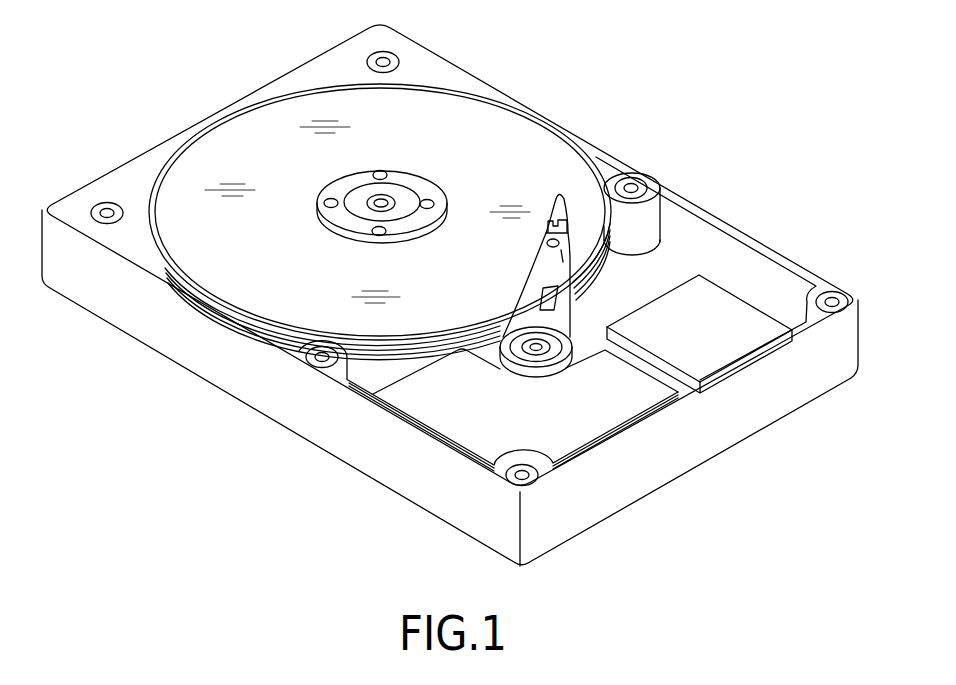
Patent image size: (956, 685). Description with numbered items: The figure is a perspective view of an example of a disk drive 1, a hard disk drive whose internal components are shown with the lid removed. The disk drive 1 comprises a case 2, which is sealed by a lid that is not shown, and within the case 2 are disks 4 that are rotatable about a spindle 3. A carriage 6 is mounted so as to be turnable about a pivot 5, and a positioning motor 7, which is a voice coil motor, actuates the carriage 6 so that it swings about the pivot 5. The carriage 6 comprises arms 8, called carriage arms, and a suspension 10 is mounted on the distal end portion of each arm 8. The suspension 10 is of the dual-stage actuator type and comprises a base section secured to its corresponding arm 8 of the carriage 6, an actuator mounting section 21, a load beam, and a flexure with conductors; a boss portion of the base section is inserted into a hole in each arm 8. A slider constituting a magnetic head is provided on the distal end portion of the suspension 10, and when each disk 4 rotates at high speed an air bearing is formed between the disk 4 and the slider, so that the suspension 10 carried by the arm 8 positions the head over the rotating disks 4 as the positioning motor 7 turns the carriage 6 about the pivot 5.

The disk drive 1 is at (745, 106).
The case 2 is at (243, 390).
The spindle 3 is at (395, 192).
The disks 4 is at (495, 137).
The pivot 5 is at (547, 358).
The carriage 6 is at (600, 286).
The positioning motor 7 is at (460, 427).
The arm 8 is at (555, 324).
The suspension 10 is at (556, 197).
The actuator mounting section 21 is at (545, 224).